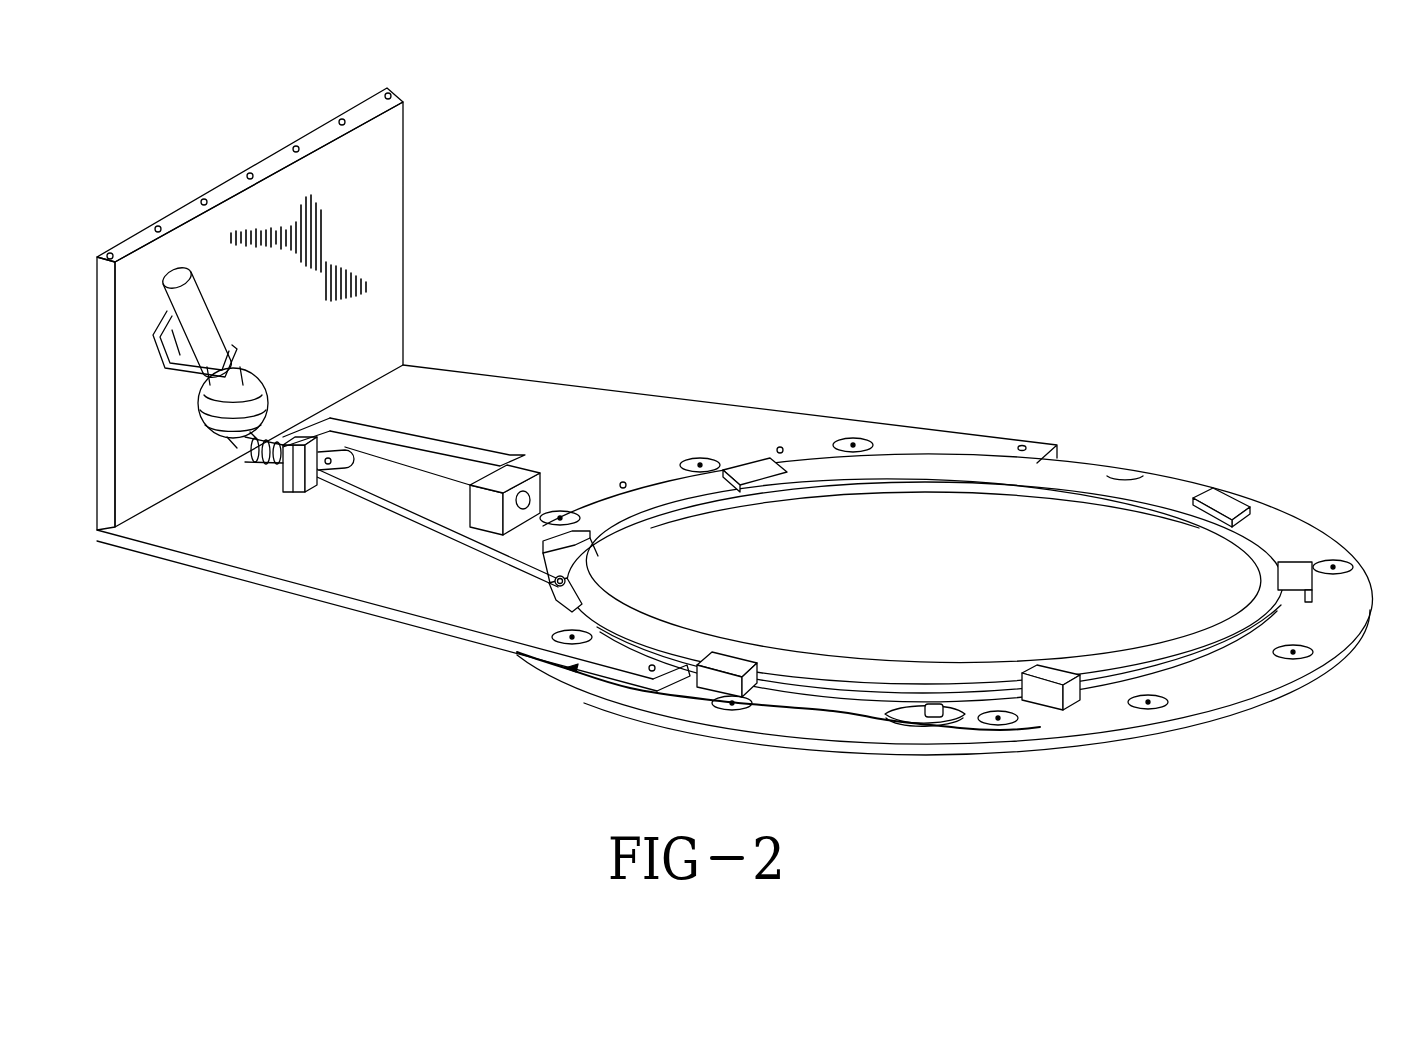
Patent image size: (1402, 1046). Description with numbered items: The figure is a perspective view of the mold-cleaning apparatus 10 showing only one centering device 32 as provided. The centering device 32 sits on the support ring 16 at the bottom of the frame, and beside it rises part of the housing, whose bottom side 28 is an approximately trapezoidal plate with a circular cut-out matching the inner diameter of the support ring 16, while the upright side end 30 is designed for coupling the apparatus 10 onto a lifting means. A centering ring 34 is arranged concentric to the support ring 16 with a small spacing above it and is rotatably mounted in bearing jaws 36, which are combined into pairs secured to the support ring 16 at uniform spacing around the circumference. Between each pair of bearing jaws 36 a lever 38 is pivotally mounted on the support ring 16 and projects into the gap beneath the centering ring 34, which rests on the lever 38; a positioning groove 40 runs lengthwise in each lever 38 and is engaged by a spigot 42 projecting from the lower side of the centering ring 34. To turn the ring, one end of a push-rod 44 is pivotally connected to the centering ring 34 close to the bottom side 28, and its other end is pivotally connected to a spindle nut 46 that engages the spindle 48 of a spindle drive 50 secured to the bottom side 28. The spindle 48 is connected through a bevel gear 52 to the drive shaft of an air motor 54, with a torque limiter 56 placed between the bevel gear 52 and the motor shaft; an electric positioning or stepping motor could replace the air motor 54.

The apparatus 10 is at (1153, 383).
The support ring 16 is at (1227, 677).
The bottom side 28 is at (715, 425).
The side end 30 is at (365, 190).
The centering device 32 is at (975, 467).
The centering ring 34 is at (600, 530).
The bearing jaws 36 is at (732, 662).
The lever 38 is at (937, 703).
The positioning groove 40 is at (833, 710).
The spigot 42 is at (822, 670).
The push-rod 44 is at (408, 512).
The spindle nut 46 is at (340, 445).
The spindle 48 is at (405, 477).
The spindle drive 50 is at (513, 467).
The bevel gear 52 is at (262, 450).
The air motor 54 is at (195, 297).
The torque limiter 56 is at (207, 412).